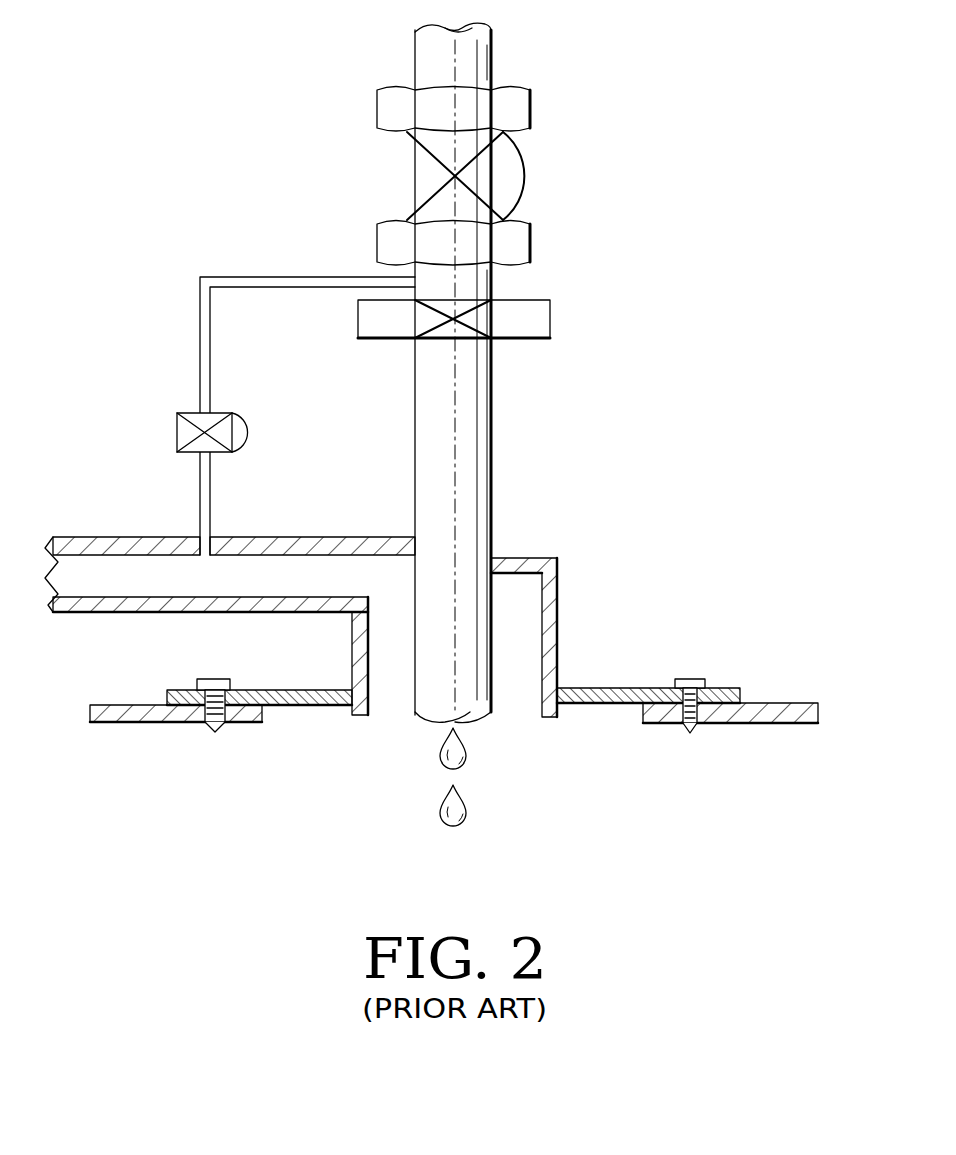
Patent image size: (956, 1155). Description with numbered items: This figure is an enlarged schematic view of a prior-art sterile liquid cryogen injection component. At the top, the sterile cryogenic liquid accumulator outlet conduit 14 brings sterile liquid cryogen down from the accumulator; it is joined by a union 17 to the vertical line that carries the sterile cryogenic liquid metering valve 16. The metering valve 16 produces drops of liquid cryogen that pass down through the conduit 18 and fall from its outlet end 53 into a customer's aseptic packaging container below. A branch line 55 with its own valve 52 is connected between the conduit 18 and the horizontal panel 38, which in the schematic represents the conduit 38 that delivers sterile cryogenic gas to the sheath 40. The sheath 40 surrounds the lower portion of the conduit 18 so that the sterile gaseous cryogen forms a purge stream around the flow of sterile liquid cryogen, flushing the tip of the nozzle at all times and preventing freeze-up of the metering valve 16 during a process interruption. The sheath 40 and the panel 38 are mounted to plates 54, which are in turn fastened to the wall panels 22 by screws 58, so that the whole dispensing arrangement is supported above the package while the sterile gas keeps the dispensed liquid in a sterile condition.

The sterile cryogenic liquid accumulator outlet conduit 14 is at (493, 60).
The union 17 is at (523, 180).
The sterile cryogenic liquid metering valve 16 is at (550, 318).
The conduit 18 is at (493, 458).
The bypass line 55 is at (283, 275).
The bypass valve 52 is at (183, 443).
The conduit 38 is at (318, 537).
The sheath 40 is at (558, 595).
The plate 54 is at (303, 688).
The wall panel 22 is at (127, 702).
The screw 58 is at (213, 728).
The outlet end 53 is at (422, 725).